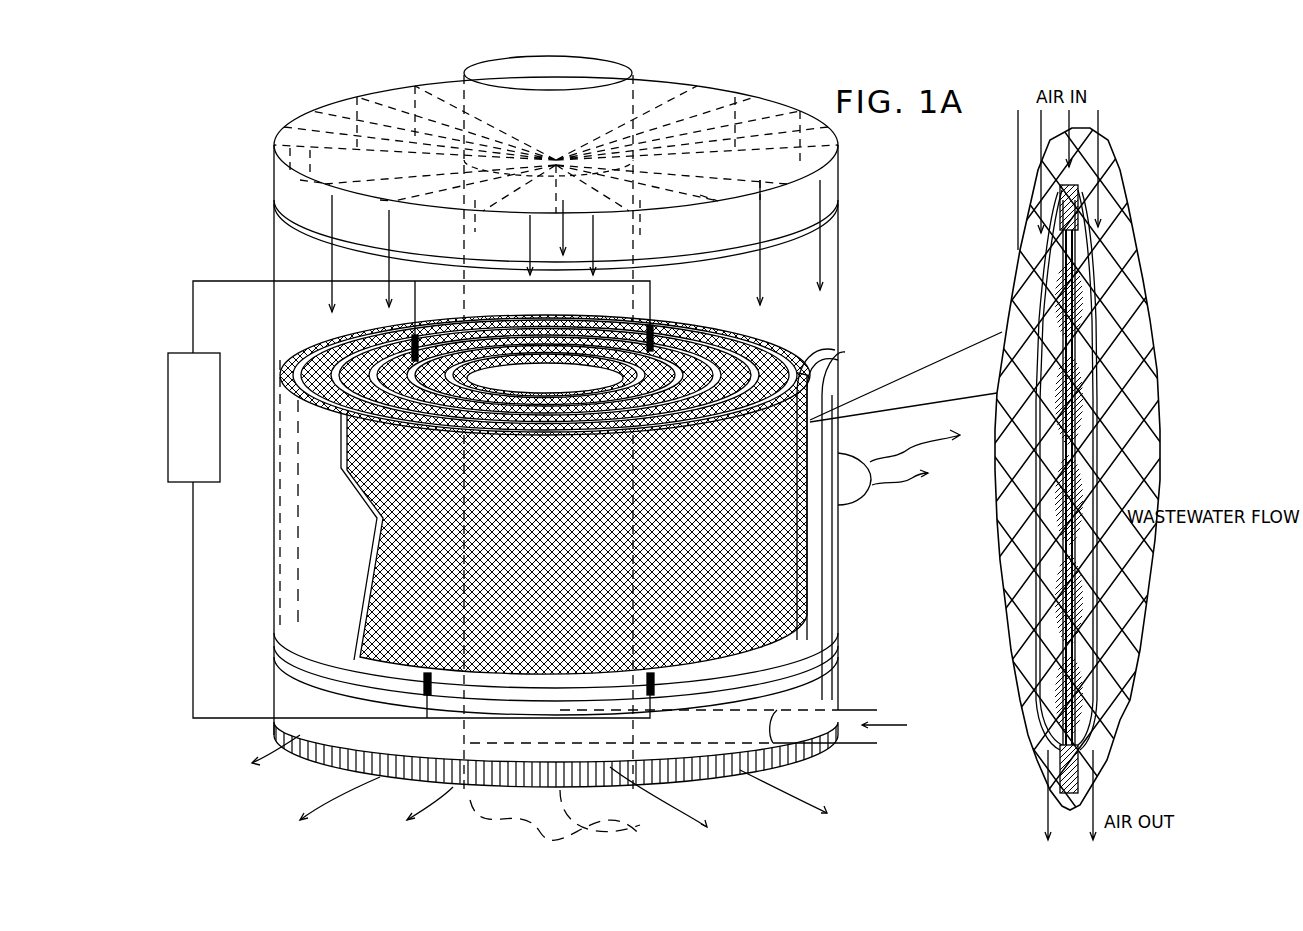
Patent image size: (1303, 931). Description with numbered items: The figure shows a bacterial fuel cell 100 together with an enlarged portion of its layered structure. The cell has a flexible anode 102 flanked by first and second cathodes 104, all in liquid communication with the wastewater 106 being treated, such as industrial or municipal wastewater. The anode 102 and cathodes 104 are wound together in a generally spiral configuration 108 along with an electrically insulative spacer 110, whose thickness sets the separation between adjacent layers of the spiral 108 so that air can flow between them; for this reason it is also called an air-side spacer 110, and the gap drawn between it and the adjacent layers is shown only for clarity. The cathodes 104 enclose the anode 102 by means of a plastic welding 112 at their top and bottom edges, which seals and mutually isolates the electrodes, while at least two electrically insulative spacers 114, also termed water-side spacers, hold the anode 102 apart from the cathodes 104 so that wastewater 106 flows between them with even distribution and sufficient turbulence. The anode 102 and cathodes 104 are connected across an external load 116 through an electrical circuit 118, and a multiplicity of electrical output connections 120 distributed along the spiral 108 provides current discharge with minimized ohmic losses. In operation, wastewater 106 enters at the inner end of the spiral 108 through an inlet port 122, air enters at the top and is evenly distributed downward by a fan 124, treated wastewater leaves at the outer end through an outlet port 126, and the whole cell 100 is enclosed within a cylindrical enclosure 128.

The bacterial fuel cell 100 is at (254, 152).
The anode 102 is at (1110, 258).
The cathodes 104 is at (1010, 285).
The wastewater 106 is at (1130, 302).
The spiral configuration 108 is at (686, 325).
The electrically insulative spacer (air-side spacer) 110 is at (742, 458).
The plastic welding 112 is at (1080, 190).
The electrically insulative spacers (water-side spacers) 114 is at (1118, 690).
The external load 116 is at (190, 485).
The electrical circuit 118 is at (205, 722).
The electrical output connections 120 is at (410, 330).
The inlet port 122 is at (574, 515).
The fan 124 is at (705, 130).
The outlet port 126 is at (848, 455).
The cylindrical enclosure 128 is at (282, 428).